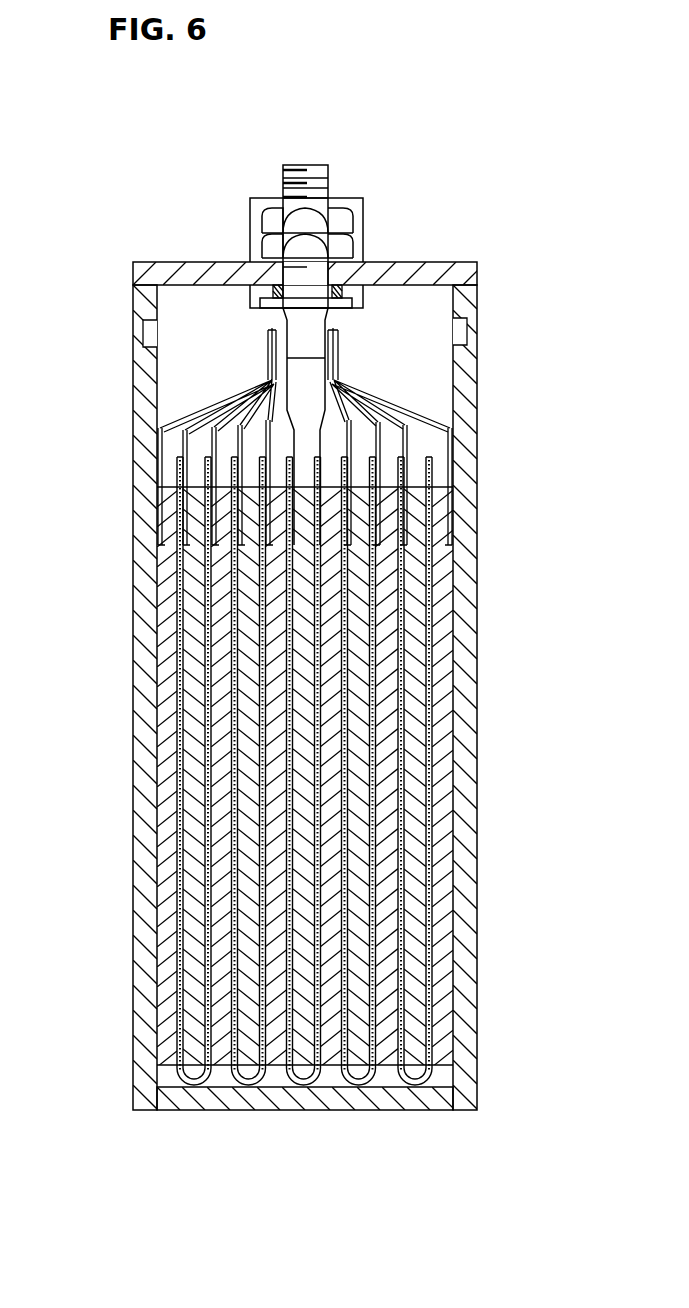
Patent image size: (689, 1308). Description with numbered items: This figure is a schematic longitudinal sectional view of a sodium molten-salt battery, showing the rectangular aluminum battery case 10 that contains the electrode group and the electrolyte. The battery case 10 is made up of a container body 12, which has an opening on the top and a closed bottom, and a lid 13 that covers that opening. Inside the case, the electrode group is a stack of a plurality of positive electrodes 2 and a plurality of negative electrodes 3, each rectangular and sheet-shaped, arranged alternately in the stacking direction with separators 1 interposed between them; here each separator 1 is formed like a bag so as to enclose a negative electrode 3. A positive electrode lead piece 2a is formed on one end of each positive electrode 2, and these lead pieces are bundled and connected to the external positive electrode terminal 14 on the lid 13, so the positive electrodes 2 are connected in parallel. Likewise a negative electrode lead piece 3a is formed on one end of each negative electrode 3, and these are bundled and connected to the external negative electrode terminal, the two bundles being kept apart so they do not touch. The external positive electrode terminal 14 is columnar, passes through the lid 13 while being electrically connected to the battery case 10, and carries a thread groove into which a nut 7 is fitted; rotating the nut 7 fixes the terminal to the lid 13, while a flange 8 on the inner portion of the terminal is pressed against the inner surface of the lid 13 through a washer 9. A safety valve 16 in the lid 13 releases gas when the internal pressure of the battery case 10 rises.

The separator 1 is at (430, 468).
The positive electrode 2 is at (443, 602).
The positive electrode lead piece 2a is at (198, 412).
The negative electrode 3 is at (420, 683).
The negative electrode lead piece 3a is at (202, 428).
The nut 7 is at (268, 222).
The flange 8 is at (342, 304).
The washer 9 is at (348, 292).
The battery case 10 is at (184, 178).
The container body 12 is at (142, 385).
The lid 13 is at (190, 274).
The external positive electrode terminal 14 is at (322, 185).
The safety valve 16 is at (358, 218).